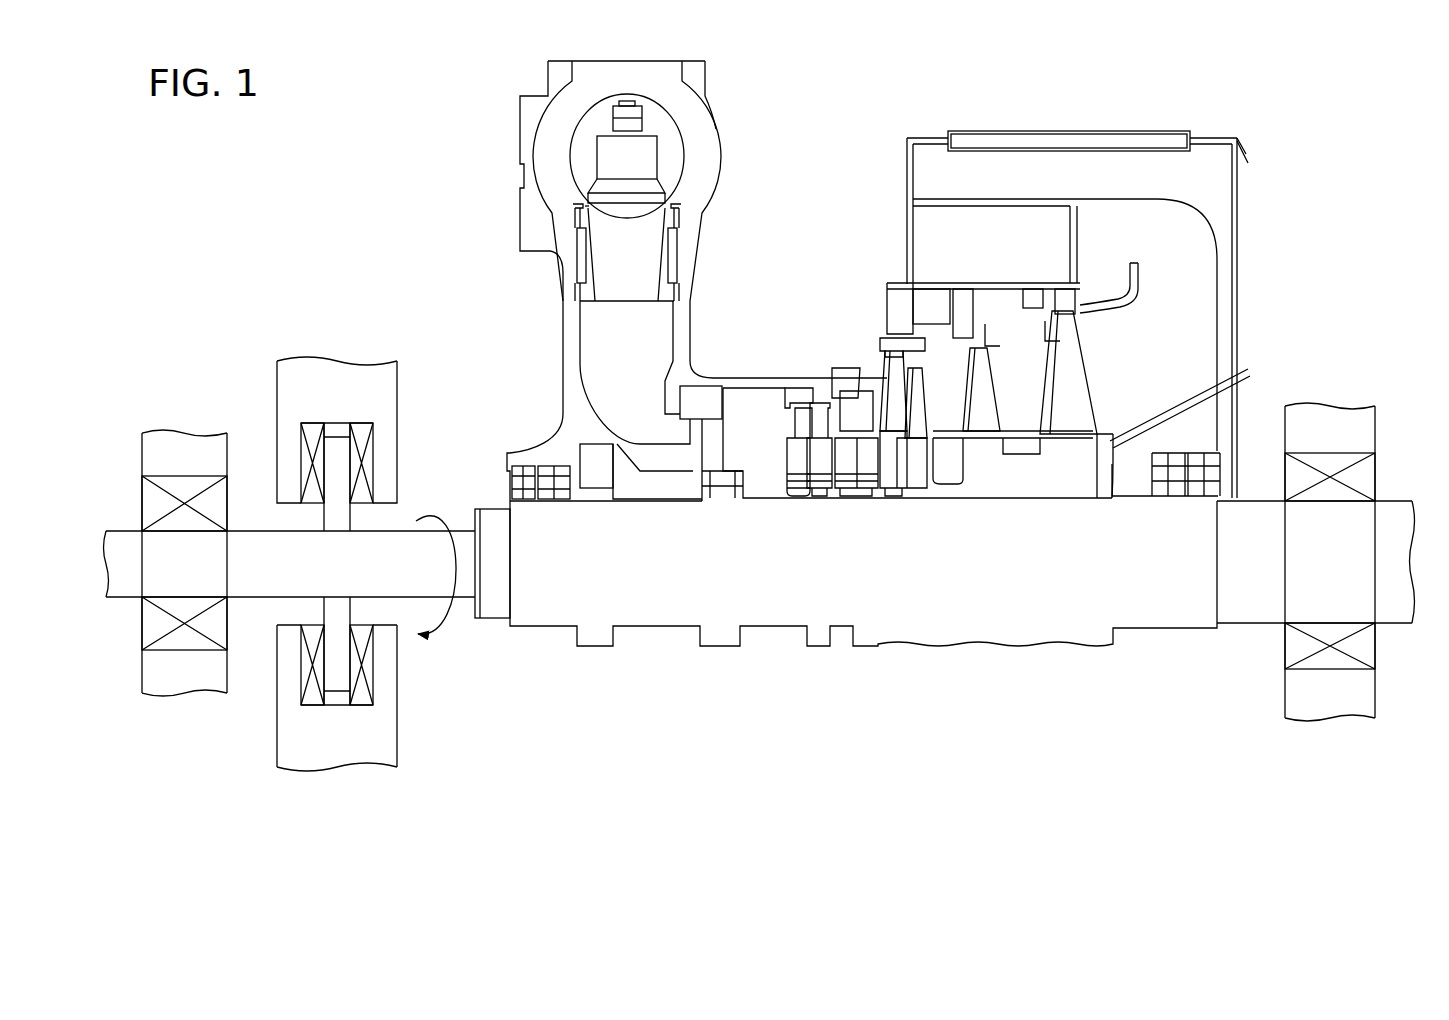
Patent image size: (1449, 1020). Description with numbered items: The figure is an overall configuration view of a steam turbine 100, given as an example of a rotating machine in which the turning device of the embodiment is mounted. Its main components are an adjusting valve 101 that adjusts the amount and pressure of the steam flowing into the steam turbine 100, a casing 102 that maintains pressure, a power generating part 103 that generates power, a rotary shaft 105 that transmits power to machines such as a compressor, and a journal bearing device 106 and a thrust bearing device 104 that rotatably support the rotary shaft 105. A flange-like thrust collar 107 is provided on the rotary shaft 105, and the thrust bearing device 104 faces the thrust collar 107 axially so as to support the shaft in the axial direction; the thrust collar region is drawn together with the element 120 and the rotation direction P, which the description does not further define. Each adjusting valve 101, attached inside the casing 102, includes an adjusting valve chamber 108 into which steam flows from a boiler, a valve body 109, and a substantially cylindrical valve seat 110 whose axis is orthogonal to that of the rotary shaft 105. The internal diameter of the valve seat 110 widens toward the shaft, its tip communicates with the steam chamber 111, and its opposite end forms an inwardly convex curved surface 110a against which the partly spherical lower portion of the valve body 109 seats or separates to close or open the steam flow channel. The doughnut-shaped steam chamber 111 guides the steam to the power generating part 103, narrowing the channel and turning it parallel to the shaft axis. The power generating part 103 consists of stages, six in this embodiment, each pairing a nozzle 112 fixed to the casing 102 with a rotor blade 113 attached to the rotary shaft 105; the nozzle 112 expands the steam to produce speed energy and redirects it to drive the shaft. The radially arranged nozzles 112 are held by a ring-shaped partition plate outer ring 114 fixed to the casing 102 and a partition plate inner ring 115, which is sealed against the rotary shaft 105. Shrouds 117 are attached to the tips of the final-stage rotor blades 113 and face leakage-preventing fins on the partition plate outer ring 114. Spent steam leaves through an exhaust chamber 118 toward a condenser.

The steam turbine 100 is at (882, 205).
The adjusting valve 101 is at (672, 152).
The casing 102 is at (838, 362).
The power generating part 103 is at (713, 470).
The thrust bearing device 104 is at (303, 454).
The rotary shaft 105 is at (923, 593).
The journal bearing device 106 is at (142, 478).
The thrust collar 107 is at (342, 454).
The adjusting valve chamber 108 is at (653, 115).
The valve body 109 is at (650, 188).
The valve seat 110 is at (663, 250).
The curved surface 110a is at (583, 204).
The steam chamber 111 is at (660, 320).
The nozzle 112 is at (803, 420).
The rotor blade 113 is at (837, 410).
The partition plate outer ring 114 is at (683, 397).
The partition plate inner ring 115 is at (845, 465).
The shroud 117 is at (1093, 310).
The exhaust chamber 118 is at (1183, 320).
The gear unit 120 is at (332, 383).
The rotation direction P is at (452, 625).